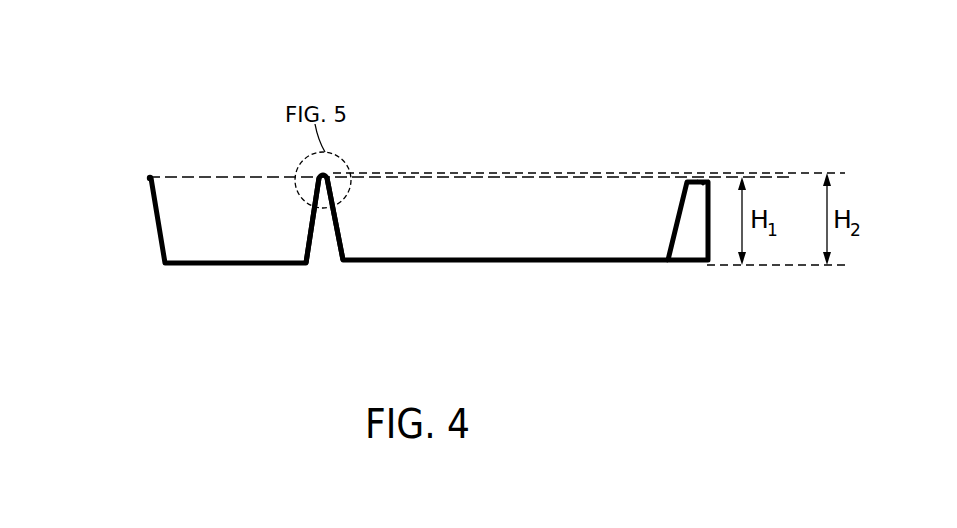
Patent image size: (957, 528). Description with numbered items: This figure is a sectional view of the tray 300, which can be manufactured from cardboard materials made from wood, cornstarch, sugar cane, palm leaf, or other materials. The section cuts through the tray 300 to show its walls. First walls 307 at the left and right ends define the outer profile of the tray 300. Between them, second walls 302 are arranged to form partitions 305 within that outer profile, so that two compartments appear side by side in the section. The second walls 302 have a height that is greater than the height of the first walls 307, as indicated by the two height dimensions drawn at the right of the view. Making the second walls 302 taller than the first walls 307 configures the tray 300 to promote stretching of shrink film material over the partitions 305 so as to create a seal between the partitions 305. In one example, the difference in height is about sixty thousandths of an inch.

The tray 300 is at (572, 97).
The second walls 302 is at (330, 172).
The partitions 305 is at (256, 230).
The first walls 307 is at (147, 181).